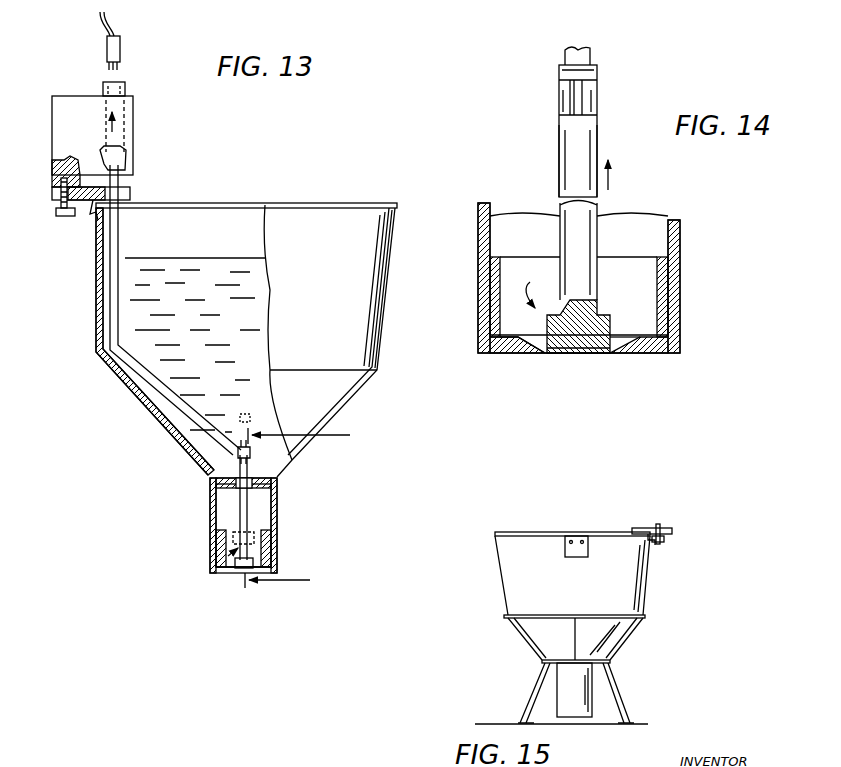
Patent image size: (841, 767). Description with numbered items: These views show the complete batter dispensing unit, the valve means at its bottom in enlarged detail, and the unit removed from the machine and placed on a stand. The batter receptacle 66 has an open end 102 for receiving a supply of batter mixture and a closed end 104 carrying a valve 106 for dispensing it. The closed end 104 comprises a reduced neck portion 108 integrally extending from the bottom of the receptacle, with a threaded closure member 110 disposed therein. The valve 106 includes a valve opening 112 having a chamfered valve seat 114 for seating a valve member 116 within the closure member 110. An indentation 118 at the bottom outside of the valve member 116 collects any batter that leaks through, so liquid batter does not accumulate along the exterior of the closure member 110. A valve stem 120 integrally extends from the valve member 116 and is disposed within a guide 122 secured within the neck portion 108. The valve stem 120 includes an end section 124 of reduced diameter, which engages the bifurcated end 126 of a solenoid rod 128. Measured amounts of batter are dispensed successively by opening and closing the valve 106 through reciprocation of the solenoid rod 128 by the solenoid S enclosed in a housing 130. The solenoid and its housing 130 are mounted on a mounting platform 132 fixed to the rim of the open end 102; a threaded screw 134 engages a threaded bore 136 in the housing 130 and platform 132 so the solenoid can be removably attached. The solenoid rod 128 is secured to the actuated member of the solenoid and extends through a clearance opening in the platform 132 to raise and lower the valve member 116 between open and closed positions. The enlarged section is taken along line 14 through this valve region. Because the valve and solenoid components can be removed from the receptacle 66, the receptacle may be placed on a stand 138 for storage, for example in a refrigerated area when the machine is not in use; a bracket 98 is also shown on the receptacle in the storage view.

In FIG. 13, the section line 14 is at (302, 509).
In FIG. 13, the batter receptacle 66 is at (256, 341).
In FIG. 15, the batter receptacle 66 is at (503, 574).
In FIG. 15, the mounting bracket 98 is at (583, 558).
In FIG. 13, the open end 102 is at (383, 203).
In FIG. 13, the closed end 104 is at (228, 573).
In FIG. 14, the closed end 104 is at (660, 357).
In FIG. 13, the valve 106 is at (228, 560).
In FIG. 14, the valve 106 is at (530, 293).
In FIG. 13, the reduced neck portion 108 is at (272, 553).
In FIG. 14, the reduced neck portion 108 is at (681, 300).
In FIG. 13, the threaded closure member 110 is at (212, 544).
In FIG. 14, the threaded closure member 110 is at (662, 268).
In FIG. 13, the valve opening 112 is at (240, 575).
In FIG. 14, the valve opening 112 is at (598, 352).
In FIG. 14, the chamfered valve seat 114 is at (528, 355).
In FIG. 13, the valve member 116 is at (255, 556).
In FIG. 14, the valve member 116 is at (605, 305).
In FIG. 14, the indentation 118 is at (575, 355).
In FIG. 13, the valve stem 120 is at (248, 520).
In FIG. 14, the valve stem 120 is at (572, 220).
In FIG. 13, the guide 122 is at (262, 484).
In FIG. 13, the end section 124 is at (236, 465).
In FIG. 14, the end section 124 is at (571, 98).
In FIG. 13, the bifurcated end 126 is at (252, 425).
In FIG. 14, the bifurcated end 126 is at (598, 98).
In FIG. 13, the solenoid rod 128 is at (150, 392).
In FIG. 14, the solenoid rod 128 is at (590, 56).
In FIG. 13, the housing 130 is at (137, 113).
In FIG. 13, the mounting platform 132 is at (135, 194).
In FIG. 15, the mounting platform 132 is at (654, 528).
In FIG. 13, the threaded screw 134 is at (62, 217).
In FIG. 15, the threaded screw 134 is at (666, 542).
In FIG. 13, the threaded bore 136 is at (58, 194).
In FIG. 15, the stand 138 is at (622, 700).